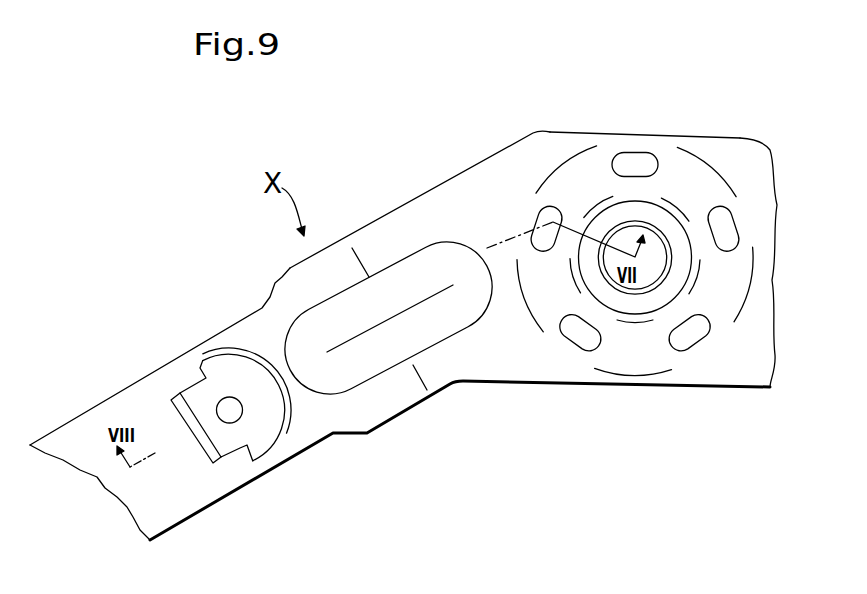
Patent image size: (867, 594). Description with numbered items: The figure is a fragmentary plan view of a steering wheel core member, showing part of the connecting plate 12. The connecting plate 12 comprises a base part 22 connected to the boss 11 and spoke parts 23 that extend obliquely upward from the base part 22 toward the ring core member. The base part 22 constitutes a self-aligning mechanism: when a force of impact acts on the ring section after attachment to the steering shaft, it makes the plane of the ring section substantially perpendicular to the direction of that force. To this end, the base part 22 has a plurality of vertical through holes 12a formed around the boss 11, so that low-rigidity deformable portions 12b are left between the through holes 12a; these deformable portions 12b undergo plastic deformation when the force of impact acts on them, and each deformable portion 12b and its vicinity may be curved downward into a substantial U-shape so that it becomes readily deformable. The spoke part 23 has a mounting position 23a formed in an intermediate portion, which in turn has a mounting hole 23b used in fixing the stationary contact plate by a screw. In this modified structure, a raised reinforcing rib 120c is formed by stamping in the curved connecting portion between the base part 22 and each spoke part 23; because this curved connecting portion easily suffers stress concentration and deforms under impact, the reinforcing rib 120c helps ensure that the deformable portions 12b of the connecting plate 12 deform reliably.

The boss 11 is at (634, 314).
The connecting plate 12 is at (403, 286).
The vertical through holes 12a is at (638, 162).
The deformable portions 12b is at (588, 177).
The raised reinforcing rib 120c is at (393, 295).
The base part 22 is at (697, 150).
The spoke part 23 is at (270, 410).
The mounting position 23a is at (255, 433).
The mounting hole 23b is at (233, 412).